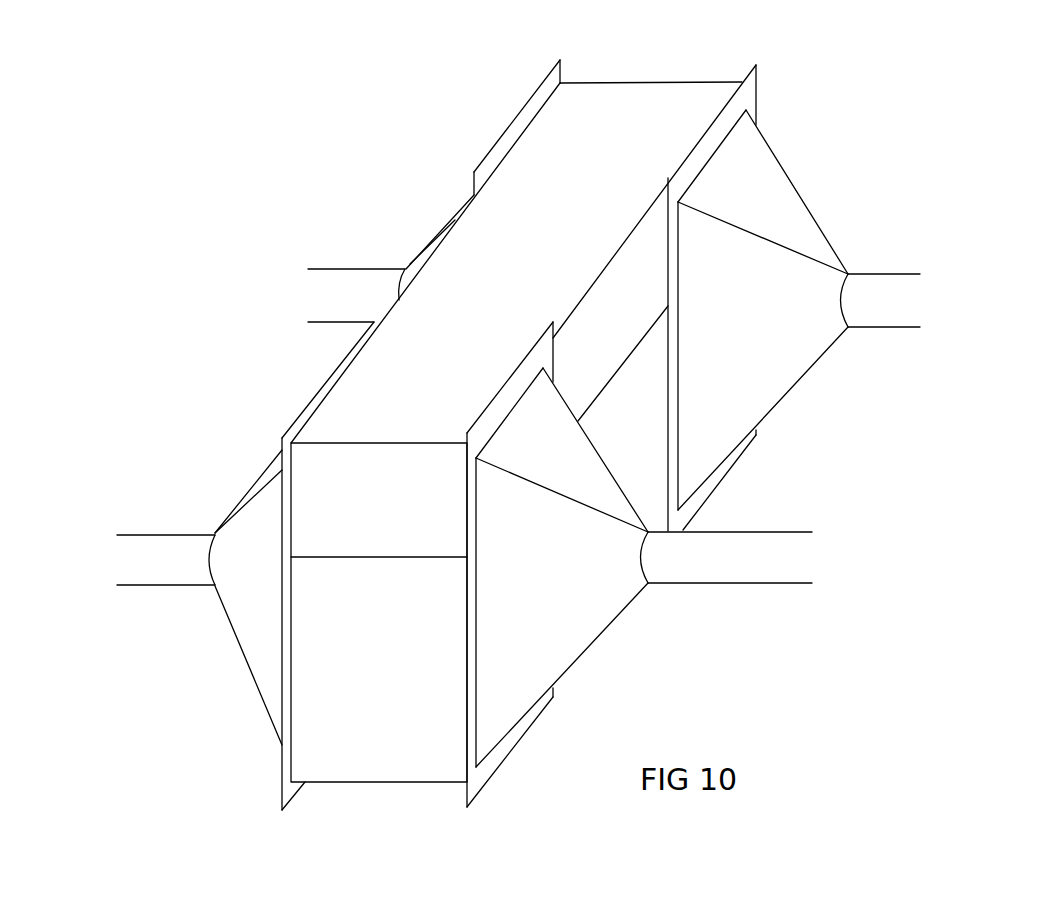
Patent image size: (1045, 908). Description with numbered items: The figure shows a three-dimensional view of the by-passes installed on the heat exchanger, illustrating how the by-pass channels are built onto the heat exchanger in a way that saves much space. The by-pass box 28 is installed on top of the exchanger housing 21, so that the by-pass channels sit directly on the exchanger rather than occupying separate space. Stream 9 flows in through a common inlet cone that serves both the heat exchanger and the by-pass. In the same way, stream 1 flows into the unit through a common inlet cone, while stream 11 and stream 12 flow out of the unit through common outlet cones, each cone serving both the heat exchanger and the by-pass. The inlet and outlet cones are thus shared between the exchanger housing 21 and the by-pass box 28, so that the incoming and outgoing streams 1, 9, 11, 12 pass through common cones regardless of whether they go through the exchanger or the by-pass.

The stream 1 is at (864, 302).
The stream 9 is at (740, 558).
The stream 11 is at (173, 557).
The stream 12 is at (363, 297).
The exchanger housing 21 is at (390, 790).
The by-pass box 28 is at (652, 82).